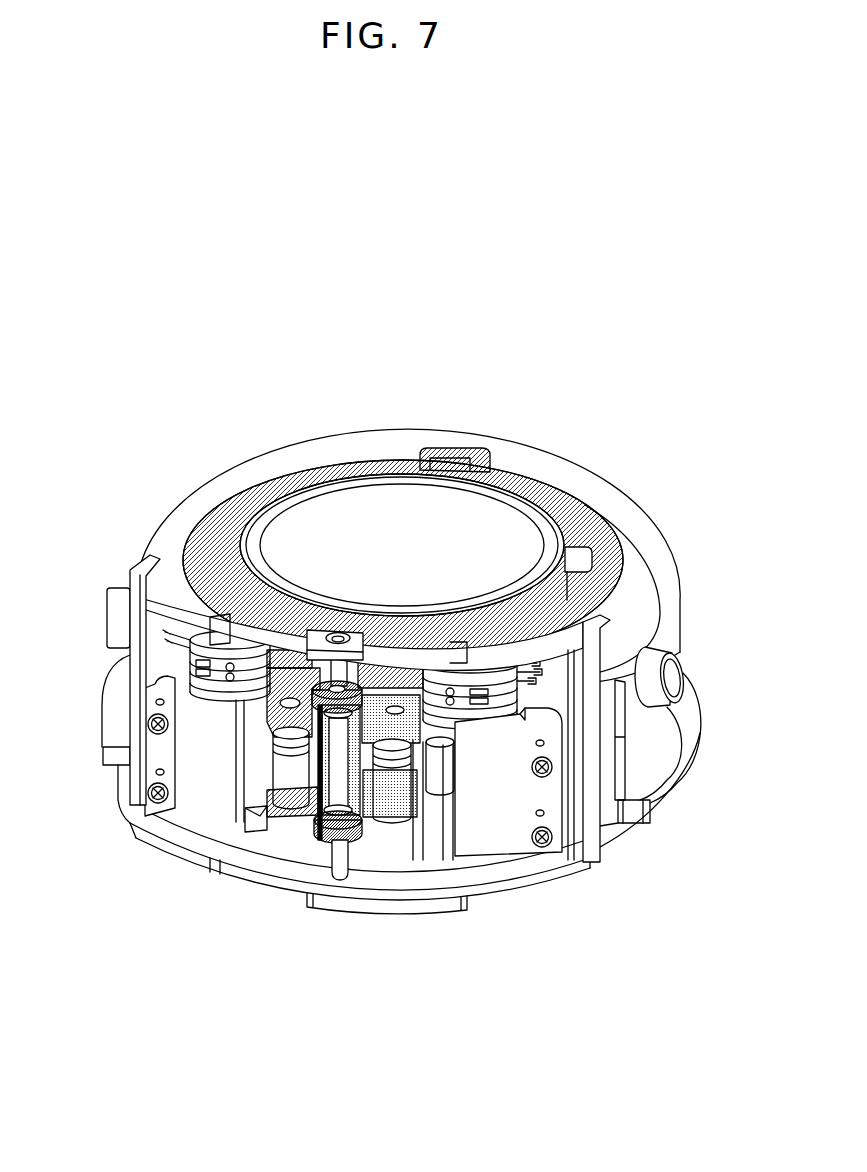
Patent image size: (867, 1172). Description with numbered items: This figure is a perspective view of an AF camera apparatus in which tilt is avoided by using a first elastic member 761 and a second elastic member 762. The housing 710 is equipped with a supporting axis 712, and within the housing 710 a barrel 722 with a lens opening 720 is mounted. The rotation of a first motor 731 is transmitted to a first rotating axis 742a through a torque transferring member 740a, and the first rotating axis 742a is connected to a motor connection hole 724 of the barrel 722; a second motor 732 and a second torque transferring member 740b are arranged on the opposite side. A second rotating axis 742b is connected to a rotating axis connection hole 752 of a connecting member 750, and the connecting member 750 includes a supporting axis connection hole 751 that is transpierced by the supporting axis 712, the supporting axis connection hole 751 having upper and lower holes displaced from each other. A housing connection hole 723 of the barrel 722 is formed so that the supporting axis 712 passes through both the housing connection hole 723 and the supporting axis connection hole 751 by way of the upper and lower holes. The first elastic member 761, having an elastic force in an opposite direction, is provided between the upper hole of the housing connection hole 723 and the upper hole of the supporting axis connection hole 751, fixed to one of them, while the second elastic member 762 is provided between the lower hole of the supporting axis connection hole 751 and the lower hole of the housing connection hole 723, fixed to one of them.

The housing 710 is at (632, 538).
The supporting axis 712 is at (338, 875).
The lens opening 720 is at (385, 512).
The barrel 722 is at (243, 577).
The housing connection hole 723 is at (297, 812).
The motor connection hole 724 is at (252, 813).
The first motor 731 is at (160, 748).
The right circuit board 732 is at (545, 785).
The torque transferring member 740a is at (247, 757).
The second motor 740b is at (462, 765).
The first rotating axis 742a is at (291, 742).
The second rotating axis 742b is at (400, 785).
The connecting member 750 is at (380, 800).
The supporting axis connection hole 751 is at (300, 768).
The rotating axis connection hole 752 is at (478, 795).
The first elastic member 761 is at (352, 790).
The second elastic member 762 is at (337, 822).